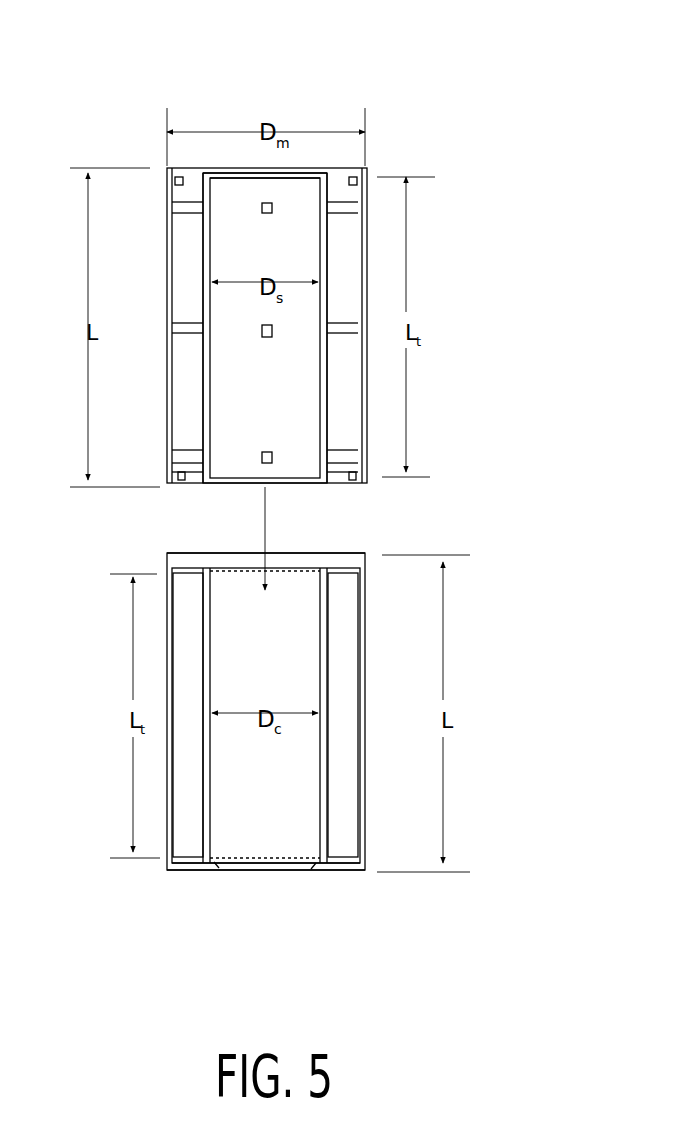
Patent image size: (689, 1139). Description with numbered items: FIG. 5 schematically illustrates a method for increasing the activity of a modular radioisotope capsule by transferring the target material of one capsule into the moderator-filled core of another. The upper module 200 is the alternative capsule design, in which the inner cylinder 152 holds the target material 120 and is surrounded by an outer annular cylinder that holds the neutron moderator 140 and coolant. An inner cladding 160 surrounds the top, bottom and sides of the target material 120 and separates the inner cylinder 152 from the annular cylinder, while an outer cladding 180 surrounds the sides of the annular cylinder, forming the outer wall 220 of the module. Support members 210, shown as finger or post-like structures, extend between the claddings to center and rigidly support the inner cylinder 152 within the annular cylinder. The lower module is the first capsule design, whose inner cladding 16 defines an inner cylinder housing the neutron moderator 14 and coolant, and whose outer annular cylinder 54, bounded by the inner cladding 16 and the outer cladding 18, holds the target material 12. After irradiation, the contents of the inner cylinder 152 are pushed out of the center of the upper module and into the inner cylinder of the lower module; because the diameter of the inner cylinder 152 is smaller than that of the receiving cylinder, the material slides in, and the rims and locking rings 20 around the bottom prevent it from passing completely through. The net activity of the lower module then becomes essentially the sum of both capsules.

The test assembly 200 is at (338, 486).
The housing 220 is at (228, 168).
The target material 120 is at (303, 400).
The inner cladding 160 is at (328, 168).
The outer cladding 180 is at (367, 257).
The neutron moderator 140 is at (340, 323).
The inner cylinder 152 is at (327, 413).
The support members 210 is at (172, 330).
The target material 12 is at (345, 772).
The outer annular cylinder 54 is at (360, 697).
The inner cladding 16 is at (322, 650).
The neutron moderator 14 is at (295, 850).
The outer cladding 18 is at (365, 853).
The locking rings or pegs 20 is at (187, 553).